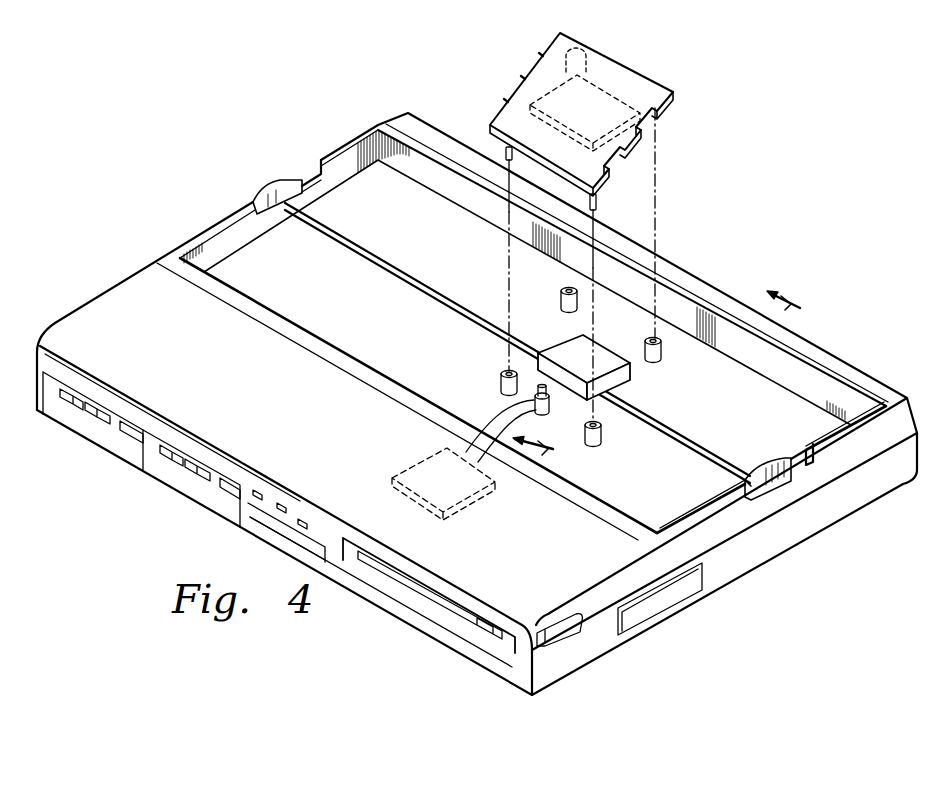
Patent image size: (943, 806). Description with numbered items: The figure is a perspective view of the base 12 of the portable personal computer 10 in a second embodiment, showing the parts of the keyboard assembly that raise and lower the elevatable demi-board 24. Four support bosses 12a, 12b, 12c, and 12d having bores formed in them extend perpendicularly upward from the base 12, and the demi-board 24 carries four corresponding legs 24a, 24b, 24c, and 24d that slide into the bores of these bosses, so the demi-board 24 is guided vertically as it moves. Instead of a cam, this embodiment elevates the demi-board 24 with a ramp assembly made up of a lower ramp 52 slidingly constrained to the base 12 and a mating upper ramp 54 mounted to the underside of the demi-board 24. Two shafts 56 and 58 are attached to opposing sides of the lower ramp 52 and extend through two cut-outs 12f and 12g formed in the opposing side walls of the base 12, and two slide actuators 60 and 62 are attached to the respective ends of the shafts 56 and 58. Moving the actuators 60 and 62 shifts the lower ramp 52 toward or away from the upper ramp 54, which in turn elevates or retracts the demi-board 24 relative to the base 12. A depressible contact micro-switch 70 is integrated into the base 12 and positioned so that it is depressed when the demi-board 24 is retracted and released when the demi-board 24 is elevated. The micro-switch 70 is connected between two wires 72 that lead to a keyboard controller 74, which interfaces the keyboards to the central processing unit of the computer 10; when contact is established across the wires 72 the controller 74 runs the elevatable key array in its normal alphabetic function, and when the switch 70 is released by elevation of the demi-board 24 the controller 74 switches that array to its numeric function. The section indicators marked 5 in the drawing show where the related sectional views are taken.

The portable personal computer 10 is at (342, 88).
The base 12 is at (352, 307).
The support boss 12a is at (507, 372).
The support boss 12b is at (602, 425).
The support boss 12c is at (662, 341).
The support boss 12d is at (563, 300).
The cut-out 12f is at (806, 446).
The cut-out 12g is at (318, 165).
The elevatable demi-board 24 is at (701, 116).
The leg 24a is at (505, 150).
The leg 24b is at (600, 203).
The leg 24c is at (654, 92).
The leg 24d is at (578, 47).
The lower ramp 52 is at (586, 350).
The upper ramp 54 is at (553, 102).
The shaft 56 is at (712, 443).
The shaft 58 is at (357, 245).
The slide actuator 60 is at (787, 486).
The slide actuator 62 is at (275, 186).
The contact micro-switch 70 is at (548, 388).
The wires 72 is at (500, 415).
The keyboard controller 74 is at (401, 462).
The section line FIG. 5 is at (666, 383).